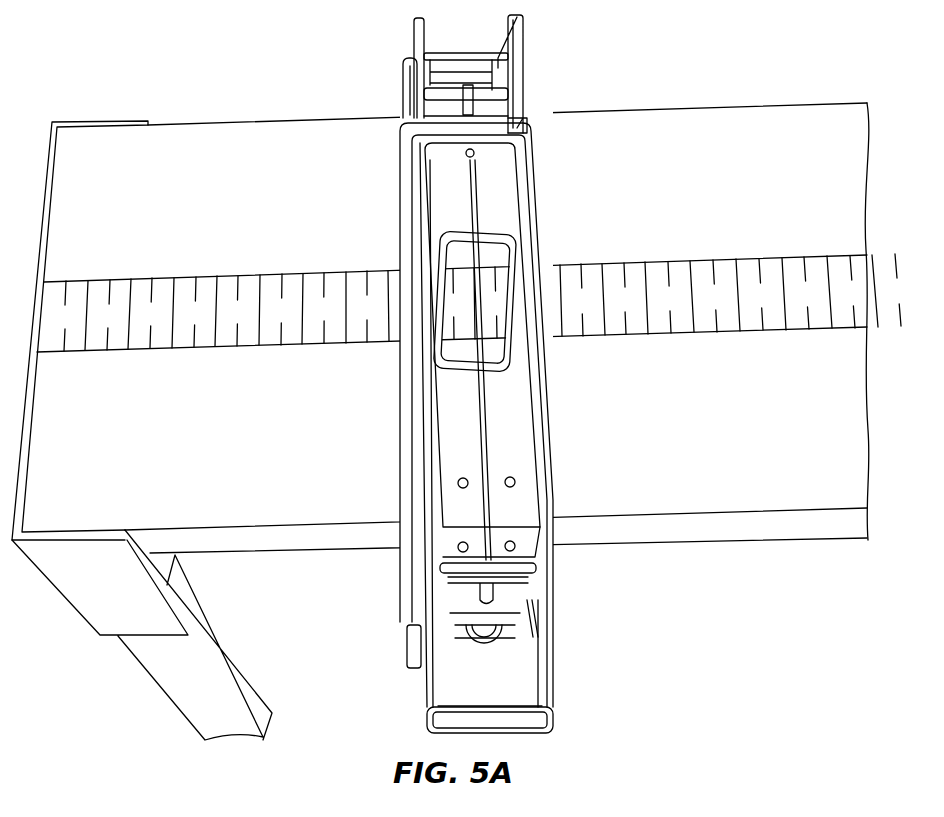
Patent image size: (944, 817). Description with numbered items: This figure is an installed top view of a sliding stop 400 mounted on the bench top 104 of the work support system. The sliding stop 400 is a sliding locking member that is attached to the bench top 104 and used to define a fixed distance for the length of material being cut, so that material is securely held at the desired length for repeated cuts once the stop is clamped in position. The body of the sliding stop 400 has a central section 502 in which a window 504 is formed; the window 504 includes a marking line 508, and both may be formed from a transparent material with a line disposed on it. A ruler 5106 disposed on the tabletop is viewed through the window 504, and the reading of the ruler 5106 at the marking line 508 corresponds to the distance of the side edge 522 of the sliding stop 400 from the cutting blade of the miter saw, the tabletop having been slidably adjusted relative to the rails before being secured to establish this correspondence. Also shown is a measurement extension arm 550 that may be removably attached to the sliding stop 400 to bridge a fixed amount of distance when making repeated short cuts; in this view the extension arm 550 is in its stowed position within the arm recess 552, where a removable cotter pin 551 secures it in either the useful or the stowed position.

The bench top 104 is at (440, 421).
The ruler 5106 is at (469, 260).
The sliding stop 400 is at (414, 428).
The marking line 508 is at (525, 351).
The window 504 is at (534, 316).
The stop body 502 is at (429, 481).
The extension arm 550 is at (359, 564).
The side edge 522 is at (558, 599).
The cotter pin 551 is at (405, 84).
The arm recess 552 is at (518, 86).